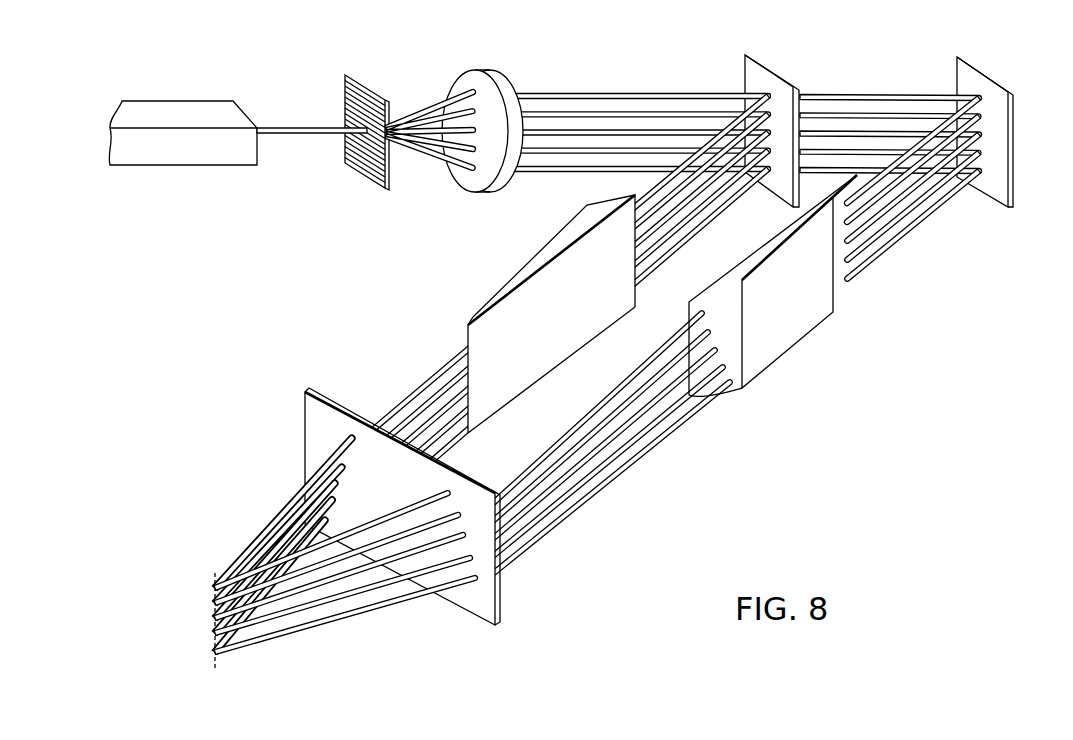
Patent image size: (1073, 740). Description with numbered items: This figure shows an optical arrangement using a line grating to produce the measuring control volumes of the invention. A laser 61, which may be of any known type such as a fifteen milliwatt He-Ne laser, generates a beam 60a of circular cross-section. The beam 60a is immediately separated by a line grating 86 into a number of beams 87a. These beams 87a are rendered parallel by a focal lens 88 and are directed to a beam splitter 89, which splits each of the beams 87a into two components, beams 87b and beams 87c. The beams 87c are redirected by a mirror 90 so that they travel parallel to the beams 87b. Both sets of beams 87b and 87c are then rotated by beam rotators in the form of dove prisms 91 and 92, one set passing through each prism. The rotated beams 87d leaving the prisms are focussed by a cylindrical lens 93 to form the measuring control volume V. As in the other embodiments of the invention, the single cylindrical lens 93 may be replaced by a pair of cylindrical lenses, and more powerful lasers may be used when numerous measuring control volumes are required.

The laser 61 is at (212, 108).
The beam 60a is at (307, 135).
The line grating 86 is at (386, 104).
The beams 87a is at (430, 163).
The focal lens 88 is at (497, 190).
The beam components 87b is at (692, 233).
The beam splitter 89 is at (795, 83).
The beam components 87c is at (893, 94).
The mirror 90 is at (1009, 93).
The dove prism 91 is at (455, 323).
The dove prism 92 is at (818, 327).
The rotated beams 87d is at (390, 405).
The cylindrical lens 93 is at (503, 616).
The measuring control volume V is at (215, 582).